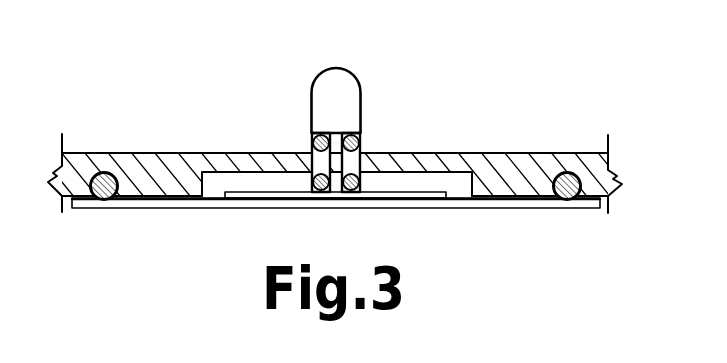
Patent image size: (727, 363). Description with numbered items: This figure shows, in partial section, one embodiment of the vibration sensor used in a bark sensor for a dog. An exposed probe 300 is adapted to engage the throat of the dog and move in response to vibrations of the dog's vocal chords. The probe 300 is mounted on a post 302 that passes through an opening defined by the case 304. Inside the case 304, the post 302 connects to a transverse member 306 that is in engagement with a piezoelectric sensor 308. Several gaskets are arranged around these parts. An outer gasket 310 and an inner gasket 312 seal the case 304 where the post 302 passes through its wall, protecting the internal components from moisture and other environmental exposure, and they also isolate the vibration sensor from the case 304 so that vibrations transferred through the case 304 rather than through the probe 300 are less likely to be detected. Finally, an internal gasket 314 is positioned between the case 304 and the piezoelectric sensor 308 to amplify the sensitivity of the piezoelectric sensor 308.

The probe 300 is at (342, 90).
The post 302 is at (332, 163).
The case 304 is at (575, 156).
The transverse member 306 is at (240, 197).
The piezoelectric sensor 308 is at (120, 206).
The outer gasket 310 is at (362, 141).
The inner gasket 312 is at (352, 186).
The internal gasket 314 is at (102, 200).